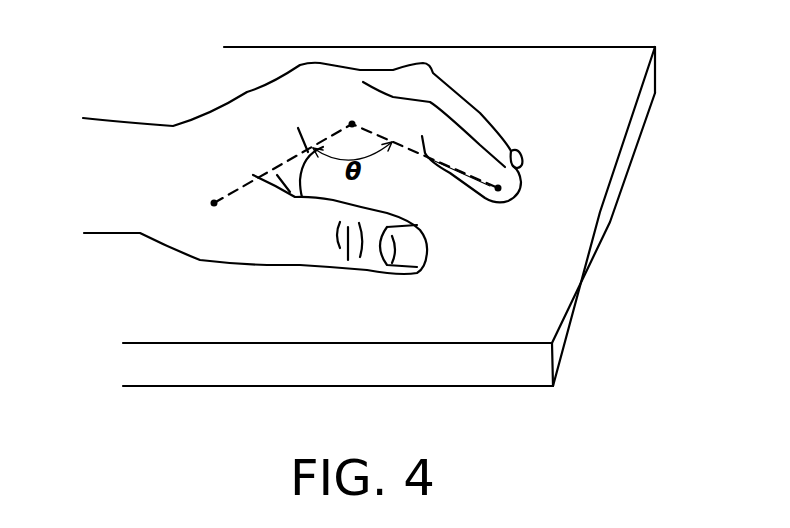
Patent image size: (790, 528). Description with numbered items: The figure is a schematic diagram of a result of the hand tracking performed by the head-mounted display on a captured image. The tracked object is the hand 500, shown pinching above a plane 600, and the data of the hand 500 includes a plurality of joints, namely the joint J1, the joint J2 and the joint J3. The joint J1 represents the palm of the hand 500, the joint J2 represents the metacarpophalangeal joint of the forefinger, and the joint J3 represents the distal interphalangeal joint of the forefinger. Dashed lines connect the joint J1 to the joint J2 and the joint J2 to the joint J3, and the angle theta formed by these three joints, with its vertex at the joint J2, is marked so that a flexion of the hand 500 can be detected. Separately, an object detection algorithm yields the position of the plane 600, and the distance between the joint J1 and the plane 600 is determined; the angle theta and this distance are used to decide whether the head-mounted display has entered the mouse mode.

The hand 500 is at (128, 120).
The plane 600 is at (605, 226).
The joint J1 is at (214, 203).
The joint J2 is at (352, 124).
The joint J3 is at (498, 190).